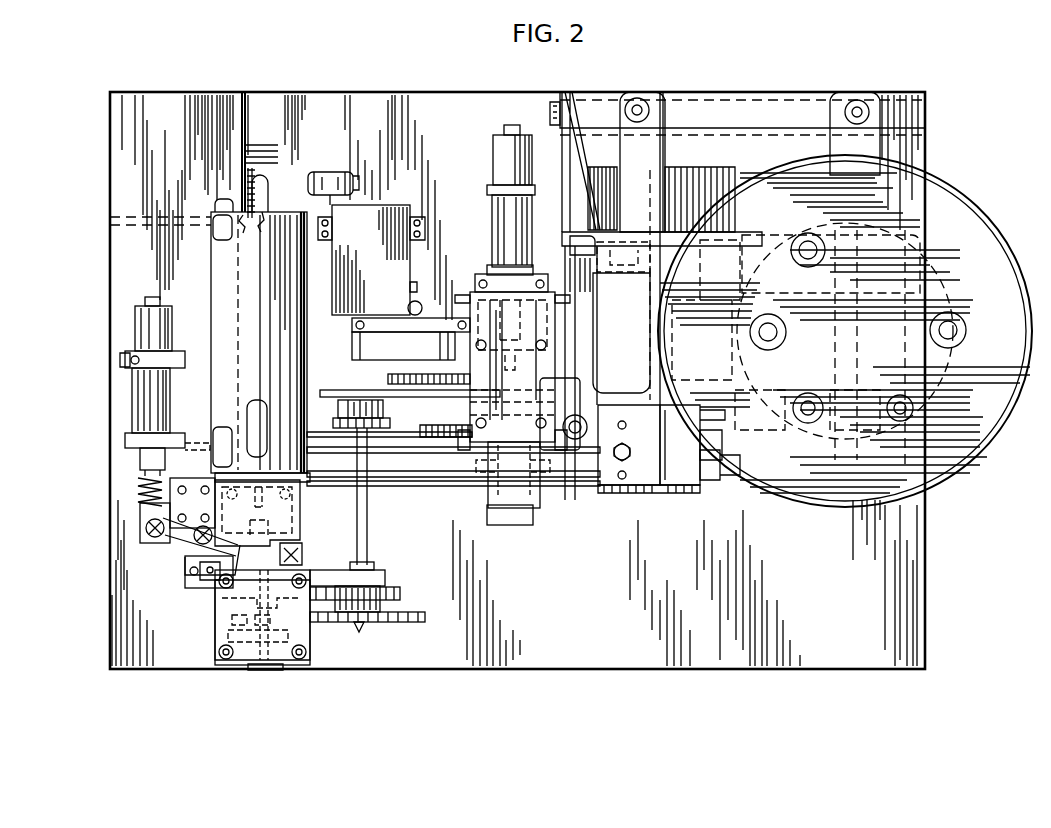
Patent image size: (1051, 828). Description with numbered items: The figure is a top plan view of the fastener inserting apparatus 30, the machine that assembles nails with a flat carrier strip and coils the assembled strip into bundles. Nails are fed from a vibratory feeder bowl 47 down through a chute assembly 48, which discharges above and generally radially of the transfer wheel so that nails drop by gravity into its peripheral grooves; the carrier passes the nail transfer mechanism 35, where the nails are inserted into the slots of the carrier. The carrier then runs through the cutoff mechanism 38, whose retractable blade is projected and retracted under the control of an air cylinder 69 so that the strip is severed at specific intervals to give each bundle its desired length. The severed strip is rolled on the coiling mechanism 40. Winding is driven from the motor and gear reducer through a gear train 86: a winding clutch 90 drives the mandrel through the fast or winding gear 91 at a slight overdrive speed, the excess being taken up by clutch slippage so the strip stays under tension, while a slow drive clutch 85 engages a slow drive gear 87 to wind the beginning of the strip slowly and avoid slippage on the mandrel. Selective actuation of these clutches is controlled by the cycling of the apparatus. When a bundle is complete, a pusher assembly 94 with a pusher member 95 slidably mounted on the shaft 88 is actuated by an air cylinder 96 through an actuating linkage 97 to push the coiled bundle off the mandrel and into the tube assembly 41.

The fastener inserting apparatus 30 is at (668, 726).
The nail transfer mechanism 35 is at (658, 500).
The cutoff mechanism 38 is at (511, 535).
The coiling mechanism 40 is at (180, 560).
The tube assembly 41 is at (211, 249).
The feeder bowl 47 is at (966, 210).
The chute assembly 48 is at (642, 492).
The air cylinder 69 is at (502, 157).
The slow drive clutch 85 is at (222, 596).
The gear train 86 is at (348, 390).
The slow drive gear 87 is at (362, 582).
The shaft 88 is at (300, 553).
The winding clutch 90 is at (248, 666).
The winding gear 91 is at (305, 626).
The pusher assembly 94 is at (182, 592).
The pusher member 95 is at (288, 522).
The air cylinder 96 is at (150, 380).
The actuating linkage 97 is at (160, 536).